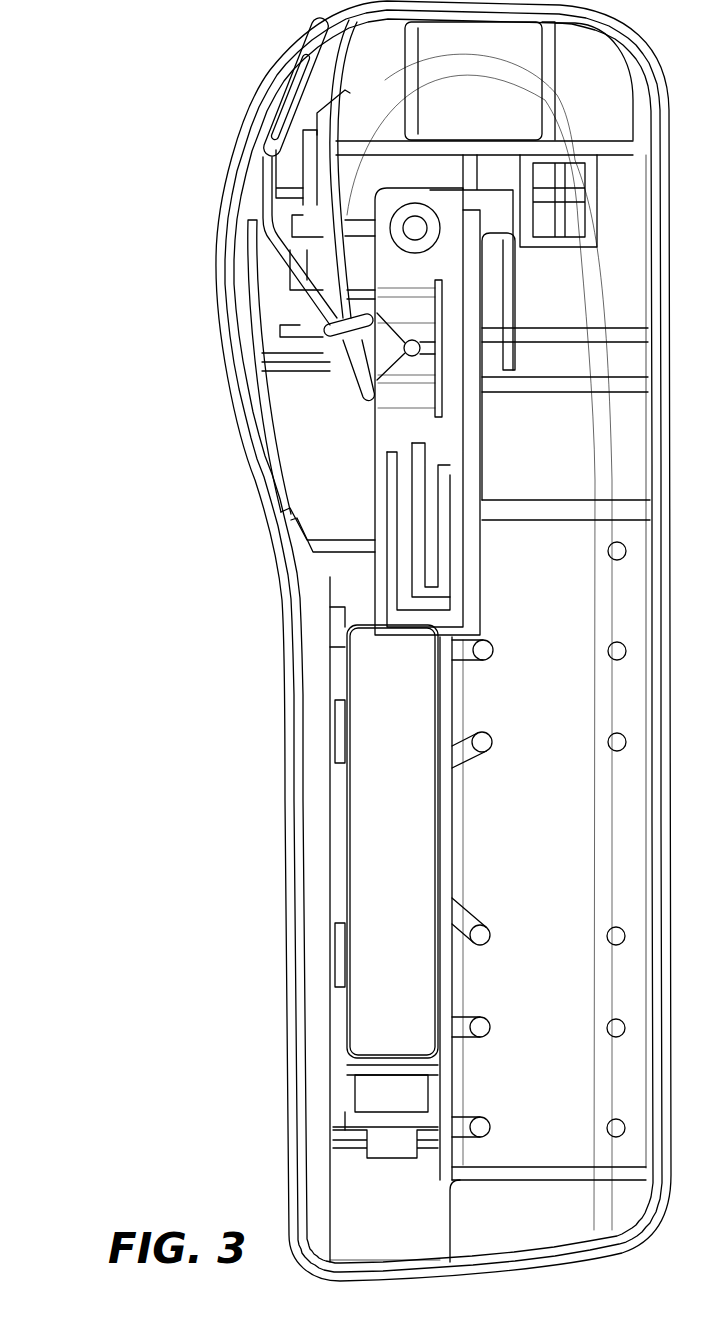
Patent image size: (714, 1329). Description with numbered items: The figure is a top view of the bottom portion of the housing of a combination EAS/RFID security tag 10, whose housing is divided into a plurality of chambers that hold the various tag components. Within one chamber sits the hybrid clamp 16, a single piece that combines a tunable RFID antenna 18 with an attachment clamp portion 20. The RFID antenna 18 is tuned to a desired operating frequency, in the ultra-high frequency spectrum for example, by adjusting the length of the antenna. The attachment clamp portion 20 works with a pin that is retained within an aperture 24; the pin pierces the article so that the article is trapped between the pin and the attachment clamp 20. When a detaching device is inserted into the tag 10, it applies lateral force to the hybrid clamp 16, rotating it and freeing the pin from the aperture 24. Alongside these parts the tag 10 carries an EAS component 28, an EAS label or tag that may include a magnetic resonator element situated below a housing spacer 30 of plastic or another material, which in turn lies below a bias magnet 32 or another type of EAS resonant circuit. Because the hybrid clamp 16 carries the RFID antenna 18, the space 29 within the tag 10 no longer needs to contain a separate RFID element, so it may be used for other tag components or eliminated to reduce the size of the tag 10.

The security tag 10 is at (152, 107).
The hybrid clamp 16 is at (366, 421).
The tunable RFID antenna 18 is at (380, 577).
The attachment clamp portion 20 is at (388, 253).
The aperture 24 is at (404, 350).
The EAS component 28 is at (338, 805).
The space 29 is at (521, 898).
The housing spacer 30 is at (377, 1108).
The bias magnet 32 is at (378, 902).